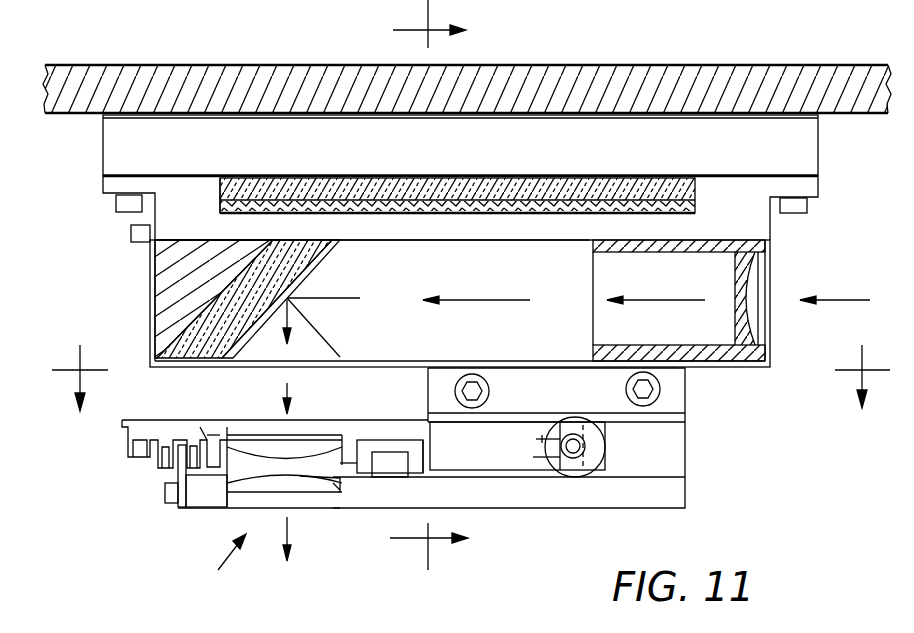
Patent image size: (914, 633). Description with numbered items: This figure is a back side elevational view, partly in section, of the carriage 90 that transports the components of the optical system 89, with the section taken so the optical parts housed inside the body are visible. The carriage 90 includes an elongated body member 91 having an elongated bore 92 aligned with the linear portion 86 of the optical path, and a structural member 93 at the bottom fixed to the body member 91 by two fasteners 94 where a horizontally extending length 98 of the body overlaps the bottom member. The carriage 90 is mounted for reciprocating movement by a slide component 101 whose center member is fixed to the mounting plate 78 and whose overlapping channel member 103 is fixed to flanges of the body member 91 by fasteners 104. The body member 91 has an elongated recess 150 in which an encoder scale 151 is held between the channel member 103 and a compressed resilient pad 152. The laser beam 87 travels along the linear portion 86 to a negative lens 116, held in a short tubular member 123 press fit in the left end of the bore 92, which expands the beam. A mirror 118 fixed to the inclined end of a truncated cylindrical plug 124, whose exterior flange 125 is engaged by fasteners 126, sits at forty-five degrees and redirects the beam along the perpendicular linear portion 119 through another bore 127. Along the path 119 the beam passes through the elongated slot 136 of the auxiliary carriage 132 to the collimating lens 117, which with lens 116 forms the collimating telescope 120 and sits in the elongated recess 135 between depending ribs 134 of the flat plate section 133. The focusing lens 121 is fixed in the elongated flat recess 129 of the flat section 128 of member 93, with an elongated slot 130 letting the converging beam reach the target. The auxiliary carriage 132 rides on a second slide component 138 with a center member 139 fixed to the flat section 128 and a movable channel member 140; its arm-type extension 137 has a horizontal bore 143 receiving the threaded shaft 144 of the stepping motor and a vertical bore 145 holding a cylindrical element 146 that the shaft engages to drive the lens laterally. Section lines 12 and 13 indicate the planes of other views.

The mounting plate 78 is at (735, 65).
The slide component 101 is at (818, 130).
The channel member 103 is at (818, 162).
The body member 91 is at (103, 181).
The fasteners 104 is at (118, 209).
The encoder scale 151 is at (582, 178).
The resilient pad 152 is at (696, 196).
The elongated recess 150 is at (221, 203).
The carriage 90 is at (771, 239).
The elongated bore 92 is at (492, 240).
The truncated cylindrical plug 124 is at (215, 240).
The fasteners 126 is at (131, 241).
The exterior flange 125 is at (150, 297).
The mirror 118 is at (313, 268).
The laser beam 87 is at (318, 300).
The bore 127 is at (342, 362).
The linear portion of the optical path 86 is at (478, 300).
The tubular member 123 is at (660, 242).
The collimating telescope 120 is at (760, 332).
The negative lens 116 is at (735, 296).
The section line 12 is at (429, 285).
The section line 13 is at (471, 378).
The horizontally extending length 98 is at (428, 389).
The structural member 93 is at (613, 510).
The fasteners 94 is at (489, 387).
The arm-type extension 137 is at (512, 422).
The threaded shaft 144 is at (580, 443).
The horizontal bore 143 is at (583, 458).
The vertical bore 145 is at (530, 439).
The cylindrical element 146 is at (529, 456).
The flat plate section 133 is at (418, 422).
The center member 139 is at (397, 478).
The slide component 138 is at (425, 443).
The channel member 140 is at (428, 459).
The collimating lens 117 is at (262, 463).
The elongated slot 136 is at (312, 441).
The elongated recess 135 is at (270, 414).
The focusing lens 121 is at (320, 467).
The ribs 134 is at (200, 424).
The auxiliary carriage 132 is at (121, 424).
The flat section 128 is at (210, 509).
The elongated flat recess 129 is at (337, 487).
The elongated slot 130 is at (333, 517).
The linear portion of the optical path 119 is at (290, 384).
The optical system 89 is at (219, 566).